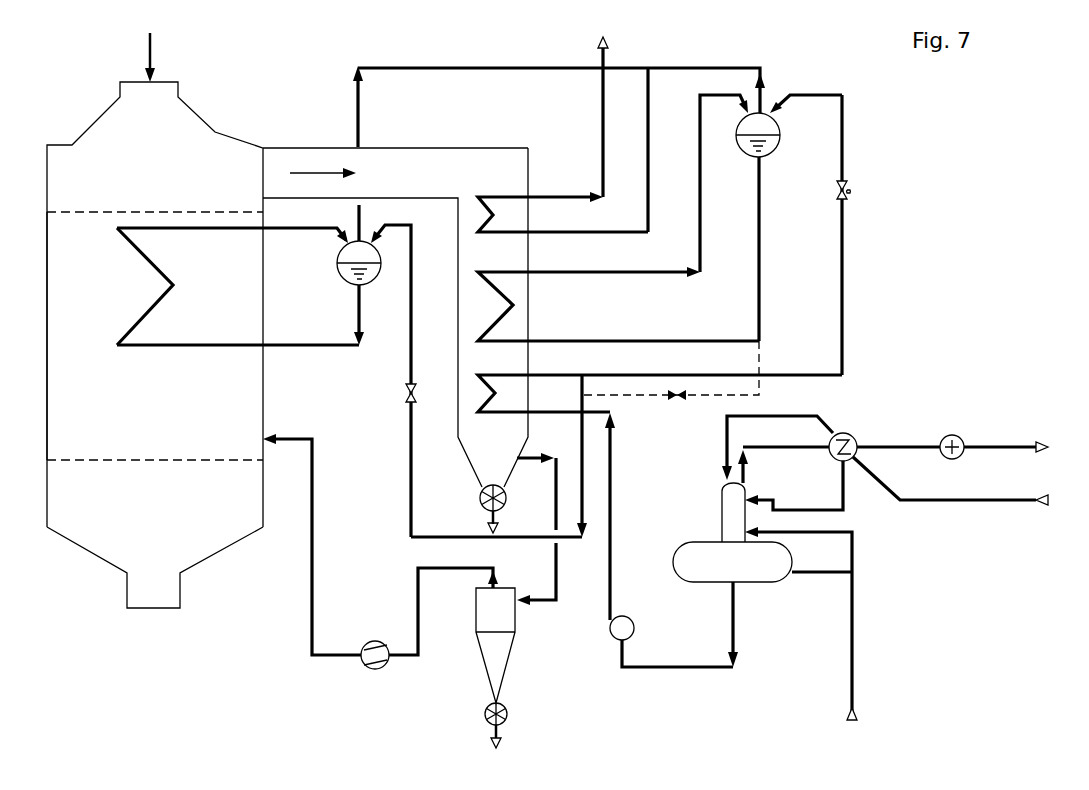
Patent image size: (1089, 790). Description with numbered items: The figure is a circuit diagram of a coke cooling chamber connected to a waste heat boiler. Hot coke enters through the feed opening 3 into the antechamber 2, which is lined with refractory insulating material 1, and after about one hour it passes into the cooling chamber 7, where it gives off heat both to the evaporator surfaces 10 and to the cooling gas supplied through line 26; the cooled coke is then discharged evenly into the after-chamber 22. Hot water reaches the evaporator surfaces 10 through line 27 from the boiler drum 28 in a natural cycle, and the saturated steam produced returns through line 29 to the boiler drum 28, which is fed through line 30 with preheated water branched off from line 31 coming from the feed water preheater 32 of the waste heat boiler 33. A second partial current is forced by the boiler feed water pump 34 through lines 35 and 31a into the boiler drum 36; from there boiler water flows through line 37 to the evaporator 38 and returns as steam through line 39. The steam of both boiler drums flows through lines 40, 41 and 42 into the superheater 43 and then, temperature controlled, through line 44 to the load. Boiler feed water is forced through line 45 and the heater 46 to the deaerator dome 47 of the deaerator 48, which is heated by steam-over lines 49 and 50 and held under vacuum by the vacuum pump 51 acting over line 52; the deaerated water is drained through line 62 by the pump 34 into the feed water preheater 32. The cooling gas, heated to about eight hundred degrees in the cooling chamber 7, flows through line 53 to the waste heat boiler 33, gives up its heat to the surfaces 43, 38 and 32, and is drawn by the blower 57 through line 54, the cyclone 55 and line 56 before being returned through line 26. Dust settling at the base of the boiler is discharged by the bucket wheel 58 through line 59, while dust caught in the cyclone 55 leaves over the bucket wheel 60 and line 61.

The refractory insulating material 1 is at (93, 124).
The antechamber 2 is at (169, 182).
The feed opening 3 is at (160, 106).
The cooling chamber 7 is at (88, 339).
The evaporator surfaces 10 is at (160, 286).
The after-chamber 22 is at (184, 508).
The line 26 is at (315, 525).
The line 27 is at (298, 347).
The boiler drum 28 is at (359, 275).
The line 29 is at (232, 231).
The line 30 is at (414, 453).
The line 31 is at (549, 374).
The line 31a is at (846, 298).
The feed water preheater 32 is at (660, 393).
The waste heat boiler 33 is at (486, 314).
The boiler feed water pump 34 is at (635, 625).
The line 35 is at (612, 470).
The boiler drum 36 is at (770, 152).
The line 37 is at (642, 340).
The evaporator 38 is at (618, 304).
The line 39 is at (612, 274).
The line 40 is at (422, 70).
The line 41 is at (700, 67).
The line 42 is at (651, 150).
The superheater 43 is at (563, 212).
The line 44 is at (600, 103).
The line 45 is at (783, 415).
The heater 46 is at (851, 436).
The deaerator dome 47 is at (720, 517).
The deaerator 48 is at (740, 577).
The steam-over line 49 is at (822, 575).
The steam-over line 50 is at (822, 534).
The vacuum pump 51 is at (958, 437).
The line 52 is at (783, 446).
The line 53 is at (338, 175).
The line 54 is at (553, 515).
The cyclone 55 is at (505, 664).
The line 56 is at (420, 620).
The blower 57 is at (363, 668).
The bucket wheel 58 is at (481, 493).
The line 59 is at (489, 521).
The bucket wheel 60 is at (507, 707).
The line 61 is at (509, 733).
The line 62 is at (736, 613).